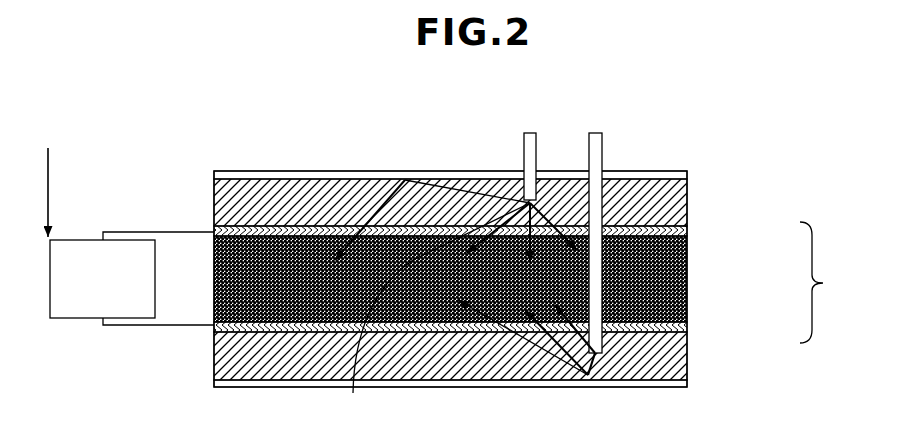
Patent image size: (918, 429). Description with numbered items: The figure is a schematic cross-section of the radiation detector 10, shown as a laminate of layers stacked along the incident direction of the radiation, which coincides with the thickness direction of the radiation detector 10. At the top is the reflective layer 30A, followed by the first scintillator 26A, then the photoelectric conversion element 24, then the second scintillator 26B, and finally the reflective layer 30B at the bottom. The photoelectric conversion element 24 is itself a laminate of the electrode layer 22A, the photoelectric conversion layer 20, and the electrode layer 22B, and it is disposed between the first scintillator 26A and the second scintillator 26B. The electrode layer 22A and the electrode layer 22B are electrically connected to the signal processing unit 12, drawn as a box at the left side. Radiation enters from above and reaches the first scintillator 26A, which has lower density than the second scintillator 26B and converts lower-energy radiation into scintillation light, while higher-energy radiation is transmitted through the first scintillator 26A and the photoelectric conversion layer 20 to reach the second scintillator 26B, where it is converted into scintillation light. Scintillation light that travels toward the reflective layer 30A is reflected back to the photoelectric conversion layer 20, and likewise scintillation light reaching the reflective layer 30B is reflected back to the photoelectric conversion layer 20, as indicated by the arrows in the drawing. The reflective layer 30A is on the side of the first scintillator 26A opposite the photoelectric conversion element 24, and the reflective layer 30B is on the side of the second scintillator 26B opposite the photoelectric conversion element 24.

The radiation detector 10 is at (687, 117).
The signal processing unit 12 is at (60, 240).
The photoelectric conversion layer 20 is at (687, 278).
The electrode layer 22A is at (687, 231).
The electrode layer 22B is at (687, 327).
The photoelectric conversion element 24 is at (826, 282).
The first scintillator 26A is at (687, 200).
The second scintillator 26B is at (687, 355).
The reflective layer 30A is at (687, 175).
The reflective layer 30B is at (687, 385).